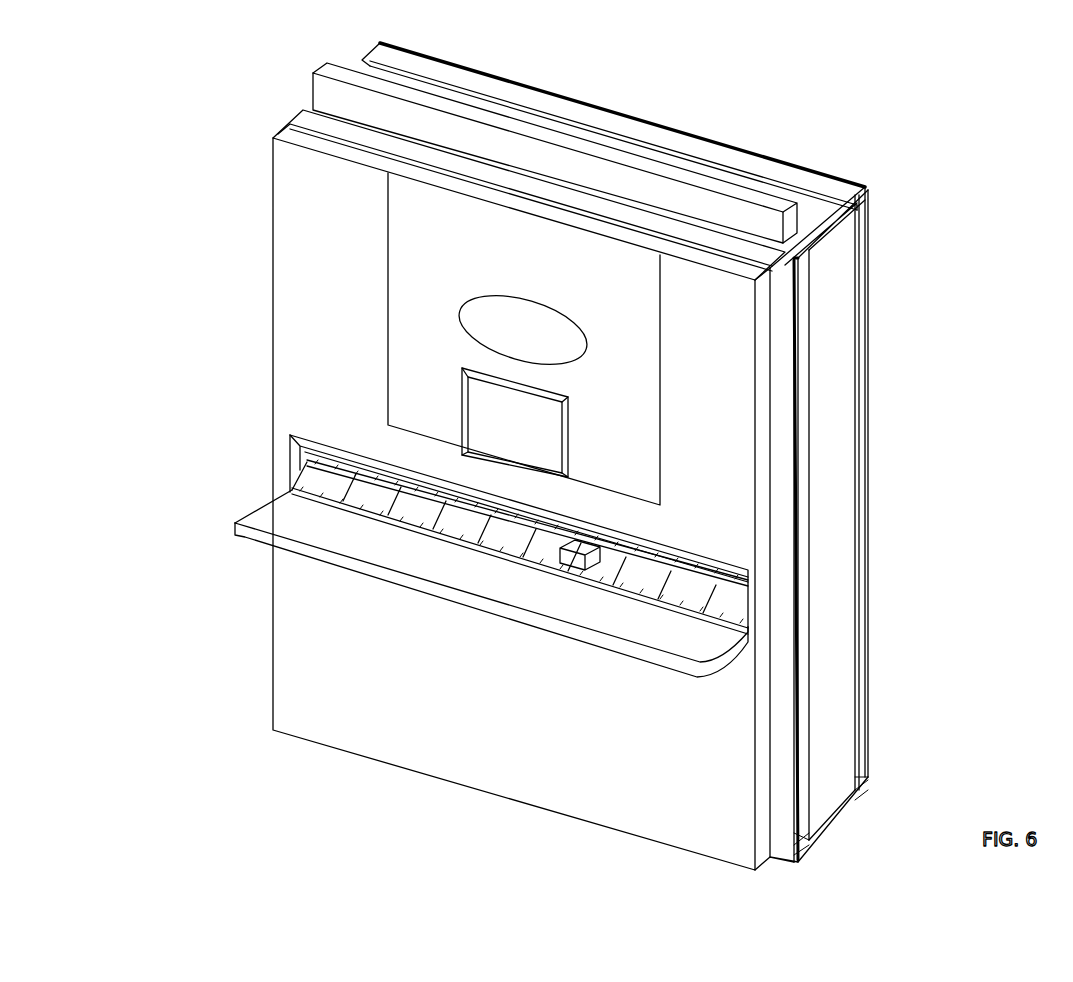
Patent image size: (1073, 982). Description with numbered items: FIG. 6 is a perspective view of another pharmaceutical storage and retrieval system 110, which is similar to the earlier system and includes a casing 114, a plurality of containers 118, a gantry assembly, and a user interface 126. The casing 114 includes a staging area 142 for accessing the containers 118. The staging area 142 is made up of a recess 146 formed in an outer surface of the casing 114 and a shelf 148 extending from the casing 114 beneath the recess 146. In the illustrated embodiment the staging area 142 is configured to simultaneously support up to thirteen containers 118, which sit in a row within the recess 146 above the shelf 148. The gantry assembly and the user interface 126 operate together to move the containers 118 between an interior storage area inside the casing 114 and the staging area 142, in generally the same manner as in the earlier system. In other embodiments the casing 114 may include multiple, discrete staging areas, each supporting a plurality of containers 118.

The pharmaceutical storage and retrieval system 110 is at (939, 103).
The casing 114 is at (286, 196).
The containers 118 is at (358, 497).
The user interface 126 is at (550, 422).
The staging area 142 is at (240, 456).
The recess 146 is at (664, 553).
The shelf 148 is at (412, 588).